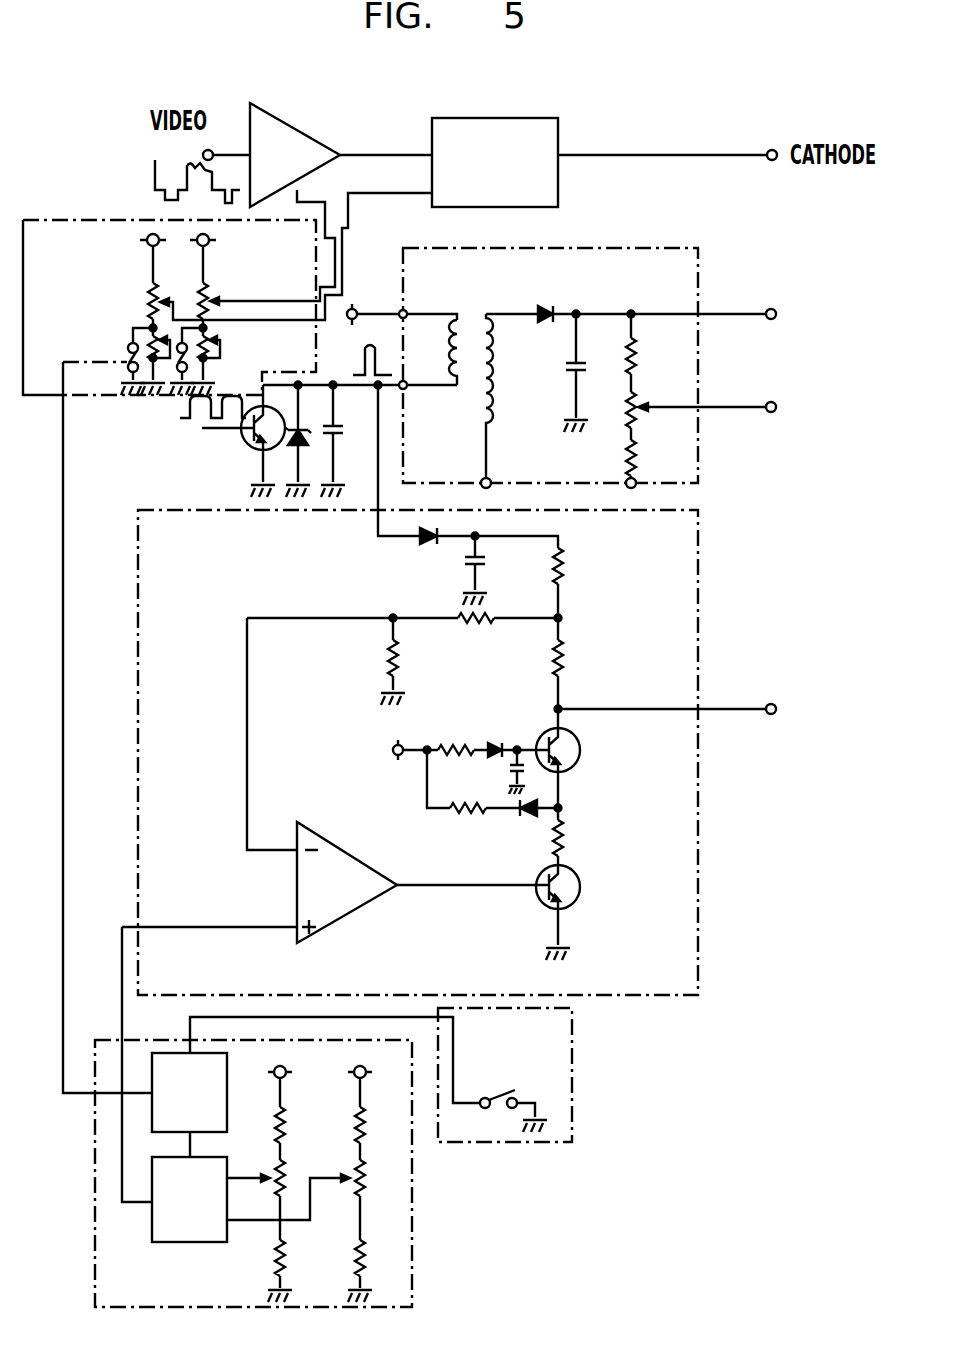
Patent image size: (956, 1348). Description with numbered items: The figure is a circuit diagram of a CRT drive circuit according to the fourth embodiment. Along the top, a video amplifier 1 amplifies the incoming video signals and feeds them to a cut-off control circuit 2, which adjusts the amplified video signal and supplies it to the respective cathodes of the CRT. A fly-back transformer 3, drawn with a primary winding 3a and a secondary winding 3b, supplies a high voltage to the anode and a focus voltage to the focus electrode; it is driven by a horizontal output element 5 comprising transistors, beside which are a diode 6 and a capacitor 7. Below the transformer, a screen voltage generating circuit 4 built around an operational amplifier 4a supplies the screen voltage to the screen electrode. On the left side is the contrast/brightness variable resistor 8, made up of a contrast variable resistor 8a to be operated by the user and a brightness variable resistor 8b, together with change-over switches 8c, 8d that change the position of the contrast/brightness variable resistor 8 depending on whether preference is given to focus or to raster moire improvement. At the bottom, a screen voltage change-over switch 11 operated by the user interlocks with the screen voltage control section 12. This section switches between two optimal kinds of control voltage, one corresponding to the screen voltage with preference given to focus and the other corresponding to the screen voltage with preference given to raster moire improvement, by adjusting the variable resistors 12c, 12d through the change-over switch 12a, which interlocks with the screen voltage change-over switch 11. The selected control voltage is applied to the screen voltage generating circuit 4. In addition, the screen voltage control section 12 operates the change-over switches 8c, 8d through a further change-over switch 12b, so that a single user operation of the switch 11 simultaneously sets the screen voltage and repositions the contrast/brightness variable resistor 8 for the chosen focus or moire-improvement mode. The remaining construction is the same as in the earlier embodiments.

The video amplifier 1 is at (300, 128).
The cut-off control circuit 2 is at (516, 118).
The fly-back transformer 3 is at (611, 338).
The primary winding of flyback transformer 3a is at (466, 316).
The secondary winding of flyback transformer 3b is at (480, 316).
The screen voltage generating circuit 4 is at (498, 752).
The operational amplifier 4a is at (343, 848).
The horizontal output element 5 is at (250, 450).
The diode 6 is at (305, 450).
The capacitor 7 is at (343, 430).
The contrast/brightness variable resistor 8 is at (176, 352).
The contrast variable resistor 8a is at (146, 300).
The brightness variable resistor 8b is at (197, 299).
The change-over switch 8c is at (128, 372).
The change-over switch 8d is at (174, 372).
The screen voltage change-over switch 11 is at (572, 1118).
The screen voltage control section 12 is at (298, 1157).
The change-over switch 12a is at (168, 1242).
The change-over switch 12b is at (158, 1050).
The variable resistor 12c is at (290, 1183).
The variable resistor 12d is at (343, 1193).